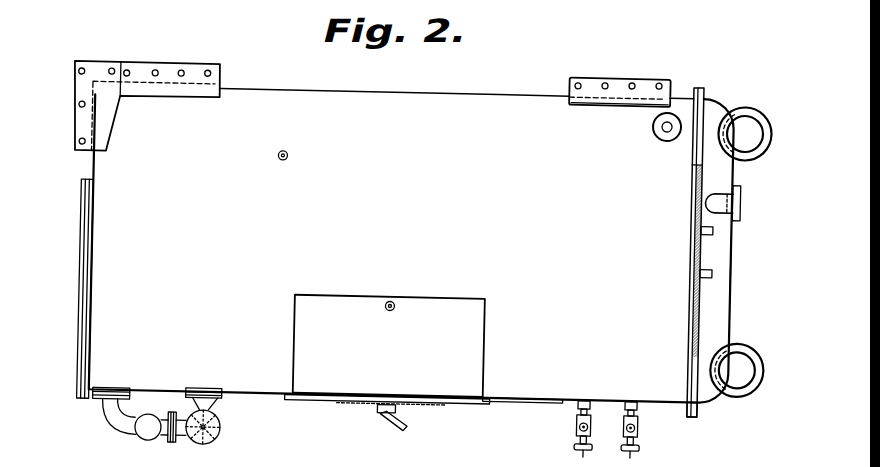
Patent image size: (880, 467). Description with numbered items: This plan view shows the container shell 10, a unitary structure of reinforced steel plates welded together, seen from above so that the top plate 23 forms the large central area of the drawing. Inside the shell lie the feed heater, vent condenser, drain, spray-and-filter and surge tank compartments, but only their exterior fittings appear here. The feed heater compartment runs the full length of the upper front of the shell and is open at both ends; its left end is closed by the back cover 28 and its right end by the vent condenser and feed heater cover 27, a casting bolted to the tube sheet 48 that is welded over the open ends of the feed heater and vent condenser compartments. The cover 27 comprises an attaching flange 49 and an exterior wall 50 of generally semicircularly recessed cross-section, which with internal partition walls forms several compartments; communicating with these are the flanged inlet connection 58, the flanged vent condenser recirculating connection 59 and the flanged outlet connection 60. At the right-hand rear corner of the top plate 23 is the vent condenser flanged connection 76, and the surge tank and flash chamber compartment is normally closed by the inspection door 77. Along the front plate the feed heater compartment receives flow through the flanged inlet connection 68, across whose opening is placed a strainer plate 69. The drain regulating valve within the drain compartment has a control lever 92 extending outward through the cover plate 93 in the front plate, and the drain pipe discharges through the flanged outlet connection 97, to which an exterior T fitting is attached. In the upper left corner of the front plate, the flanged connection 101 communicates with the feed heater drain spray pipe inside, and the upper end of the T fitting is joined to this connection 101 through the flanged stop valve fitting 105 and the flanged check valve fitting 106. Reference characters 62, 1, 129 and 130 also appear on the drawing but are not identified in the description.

The container shell 10 is at (432, 84).
The top plate 23 is at (265, 86).
The vent condenser and feed heater cover 27 is at (733, 296).
The back cover 28 is at (79, 295).
The tube sheet 48 is at (689, 382).
The attaching flange 49 is at (692, 352).
The exterior wall 50 is at (733, 255).
The flanged inlet connection 58 is at (750, 117).
The flanged vent condenser recirculating connection 59 is at (744, 198).
The flanged outlet connection 60 is at (745, 379).
The door 62 is at (306, 461).
The flanged inlet connection 68 is at (494, 403).
The strainer plate 69 is at (446, 463).
The apparatus 1 is at (528, 464).
The vent condenser flanged connection 76 is at (652, 128).
The inspection door 77 is at (693, 252).
The control lever 92 is at (424, 411).
The cover plate 93 is at (364, 406).
The flanged outlet connection 97 is at (213, 392).
The flanged connection 101 is at (121, 394).
The flanged stop valve fitting 105 is at (224, 423).
The flanged check valve fitting 106 is at (151, 438).
The drain valve 129 is at (588, 434).
The drain valve 130 is at (635, 447).